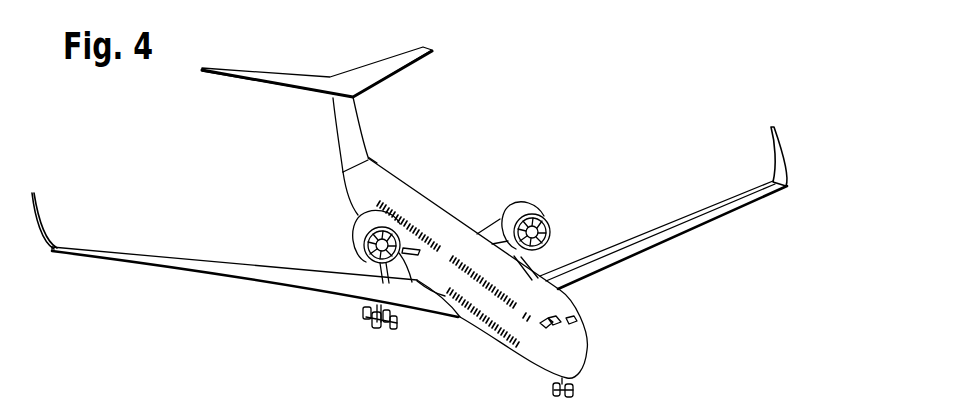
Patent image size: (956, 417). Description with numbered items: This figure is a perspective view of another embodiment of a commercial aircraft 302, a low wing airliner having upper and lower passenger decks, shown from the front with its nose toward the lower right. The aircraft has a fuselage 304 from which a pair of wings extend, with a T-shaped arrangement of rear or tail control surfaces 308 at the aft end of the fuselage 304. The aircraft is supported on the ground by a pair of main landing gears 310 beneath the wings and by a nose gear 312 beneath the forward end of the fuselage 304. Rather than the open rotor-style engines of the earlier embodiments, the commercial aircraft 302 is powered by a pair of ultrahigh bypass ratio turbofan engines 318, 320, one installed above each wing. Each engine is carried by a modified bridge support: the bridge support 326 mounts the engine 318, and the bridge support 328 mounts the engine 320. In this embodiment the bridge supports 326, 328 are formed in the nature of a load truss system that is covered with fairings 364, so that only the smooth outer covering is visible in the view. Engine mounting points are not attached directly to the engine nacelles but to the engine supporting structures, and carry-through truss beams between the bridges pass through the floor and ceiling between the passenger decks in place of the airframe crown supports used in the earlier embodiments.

The commercial aircraft 302 is at (475, 98).
The fuselage 304 is at (503, 341).
The rear or tail control surfaces 308 is at (270, 72).
The main landing gear 310 is at (378, 333).
The nose gear 312 is at (574, 391).
The ultrahigh bypass ratio turbofan engine 318 is at (538, 203).
The ultrahigh bypass ratio turbofan engine 320 is at (357, 230).
The bridge support 326 is at (485, 237).
The bridge support 328 is at (417, 230).
The fairings 364 is at (420, 279).